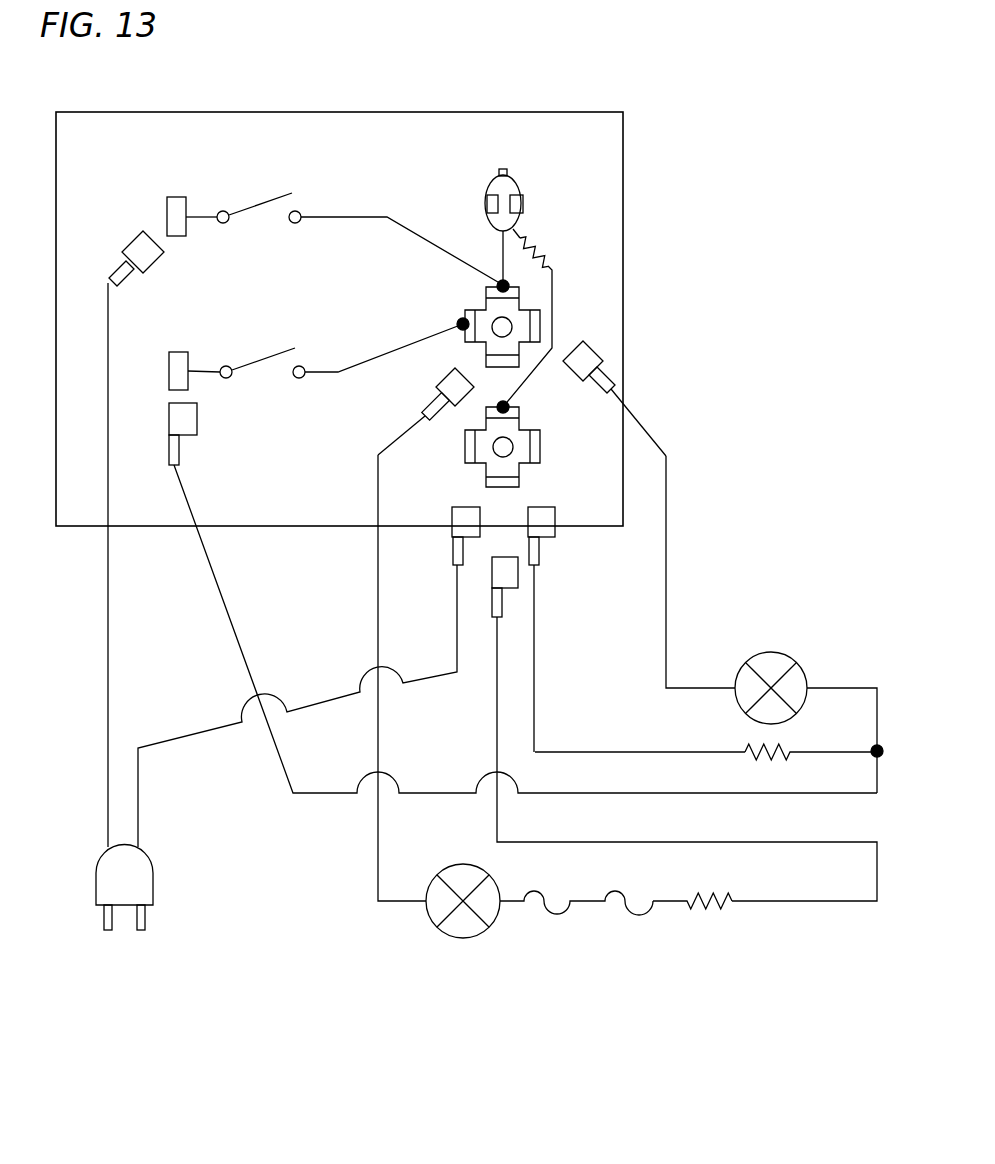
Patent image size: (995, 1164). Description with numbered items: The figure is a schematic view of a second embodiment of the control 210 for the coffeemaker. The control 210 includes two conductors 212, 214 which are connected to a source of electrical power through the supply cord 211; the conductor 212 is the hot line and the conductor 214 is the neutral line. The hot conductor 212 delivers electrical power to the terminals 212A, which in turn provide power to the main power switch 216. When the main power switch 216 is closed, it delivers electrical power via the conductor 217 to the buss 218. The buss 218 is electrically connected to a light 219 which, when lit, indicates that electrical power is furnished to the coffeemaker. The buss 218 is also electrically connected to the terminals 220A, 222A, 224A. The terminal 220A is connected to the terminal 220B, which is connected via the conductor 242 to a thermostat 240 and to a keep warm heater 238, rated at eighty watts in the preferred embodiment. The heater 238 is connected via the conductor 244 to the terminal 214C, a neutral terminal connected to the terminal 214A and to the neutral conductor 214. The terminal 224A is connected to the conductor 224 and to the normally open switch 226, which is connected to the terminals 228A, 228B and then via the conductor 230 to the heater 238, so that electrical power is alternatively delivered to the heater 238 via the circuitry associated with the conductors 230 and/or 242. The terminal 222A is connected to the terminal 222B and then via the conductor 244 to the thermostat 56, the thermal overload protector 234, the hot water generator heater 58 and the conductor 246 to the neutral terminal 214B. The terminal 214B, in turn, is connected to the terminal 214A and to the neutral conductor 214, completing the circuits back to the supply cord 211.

The control 210 is at (245, 849).
The supply cord 211 is at (132, 878).
The conductor 212 is at (108, 727).
The terminals 212A is at (168, 215).
The conductor 214 is at (200, 737).
The terminal 214A is at (452, 530).
The terminal 214B is at (512, 578).
The terminal 214C is at (547, 530).
The main power switch 216 is at (258, 202).
The conductor 217 is at (337, 215).
The buss 218 is at (510, 307).
The light 219 is at (513, 188).
The terminal 220A is at (535, 329).
The terminal 220B is at (585, 358).
The terminal 222A is at (508, 363).
The terminal 222B is at (445, 387).
The conductor 224 is at (383, 353).
The terminal 224A is at (463, 324).
The normally open switch 226 is at (258, 360).
The terminal 228A is at (169, 367).
The terminal 228B is at (197, 423).
The conductor 230 is at (313, 795).
The thermal overload protector 234 is at (637, 913).
The keep warm heater 238 is at (777, 738).
The thermostat 240 is at (775, 650).
The conductor 242 is at (666, 632).
The conductor 244 is at (376, 498).
The conductor 246 is at (785, 842).
The thermostat 56 is at (463, 938).
The hot water generator heater 58 is at (703, 912).